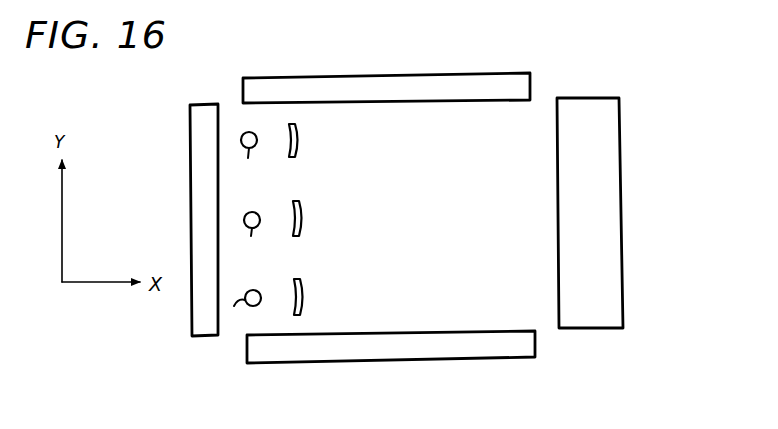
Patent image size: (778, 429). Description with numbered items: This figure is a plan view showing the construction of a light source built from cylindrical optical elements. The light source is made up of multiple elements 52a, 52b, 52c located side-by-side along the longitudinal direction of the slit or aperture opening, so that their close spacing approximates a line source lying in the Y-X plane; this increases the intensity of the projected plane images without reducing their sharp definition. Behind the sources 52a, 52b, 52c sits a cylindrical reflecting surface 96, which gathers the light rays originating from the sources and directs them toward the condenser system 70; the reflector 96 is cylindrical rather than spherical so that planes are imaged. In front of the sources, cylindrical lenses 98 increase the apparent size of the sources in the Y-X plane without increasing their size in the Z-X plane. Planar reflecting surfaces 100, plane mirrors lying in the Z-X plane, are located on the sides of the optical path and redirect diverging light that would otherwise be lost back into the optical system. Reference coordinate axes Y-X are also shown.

The cylindrical reflecting surface 96 is at (199, 106).
The planar reflecting surfaces 100 is at (359, 74).
The cylindrical lenses 98 is at (300, 145).
The light source element 52a is at (244, 161).
The light source element 52b is at (246, 239).
The light source element 52c is at (244, 314).
The condenser system 70 is at (628, 228).